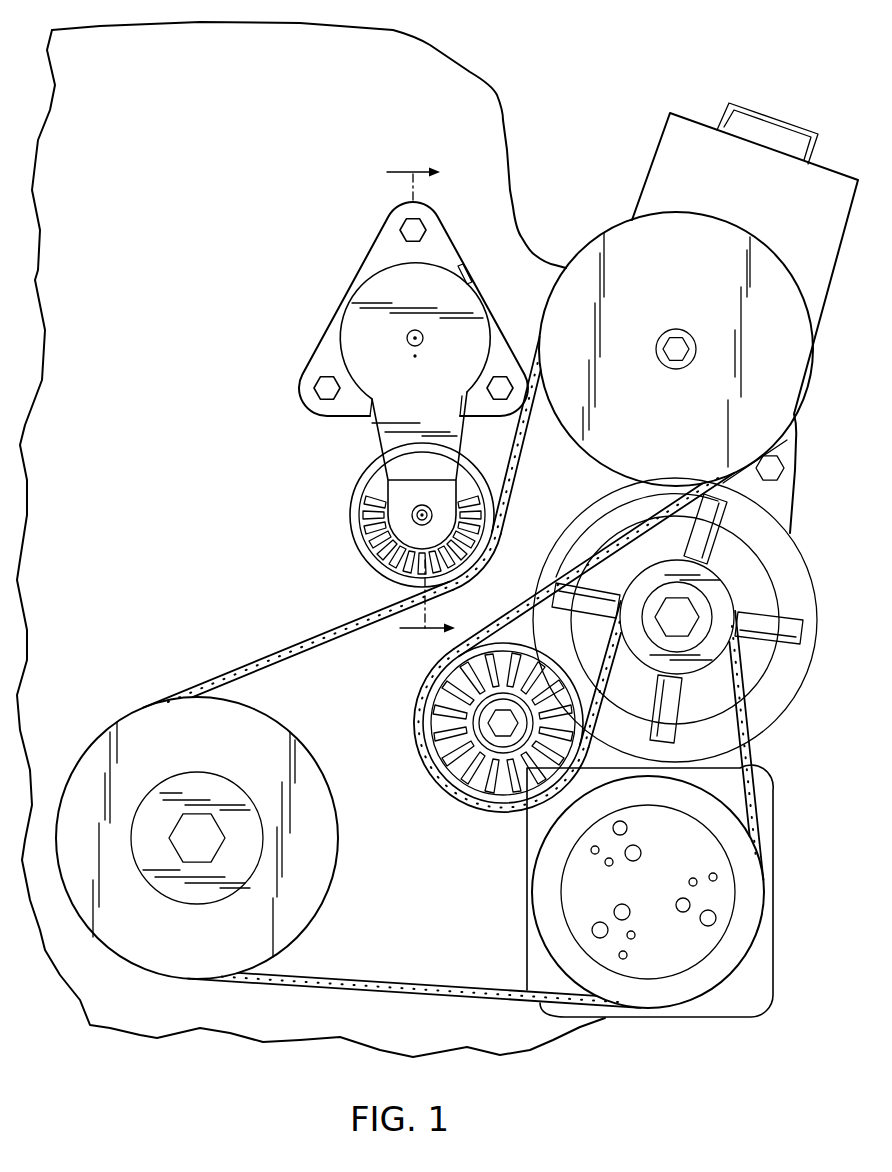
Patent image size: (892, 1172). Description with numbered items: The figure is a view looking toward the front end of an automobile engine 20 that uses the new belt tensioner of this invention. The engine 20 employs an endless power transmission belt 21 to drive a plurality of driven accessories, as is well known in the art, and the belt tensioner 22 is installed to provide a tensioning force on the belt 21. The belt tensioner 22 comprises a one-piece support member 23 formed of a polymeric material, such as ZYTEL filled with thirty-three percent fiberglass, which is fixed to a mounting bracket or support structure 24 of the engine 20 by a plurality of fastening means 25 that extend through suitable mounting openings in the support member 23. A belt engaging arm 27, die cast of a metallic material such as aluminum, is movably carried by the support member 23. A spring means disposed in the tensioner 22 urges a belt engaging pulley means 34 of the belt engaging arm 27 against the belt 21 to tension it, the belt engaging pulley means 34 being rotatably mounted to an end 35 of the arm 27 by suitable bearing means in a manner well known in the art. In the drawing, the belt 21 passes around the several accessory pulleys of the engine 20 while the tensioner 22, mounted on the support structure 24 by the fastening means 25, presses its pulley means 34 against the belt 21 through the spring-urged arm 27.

The automobile engine 20 is at (496, 56).
The endless power transmission belt 21 is at (278, 647).
The belt tensioner 22 is at (308, 335).
The support member 23 is at (360, 263).
The mounting bracket or support structure 24 is at (495, 198).
The fastening means 25 is at (403, 228).
The belt engaging arm 27 is at (383, 443).
The belt engaging pulley means 34 is at (352, 528).
The end of the arm 35 is at (415, 533).